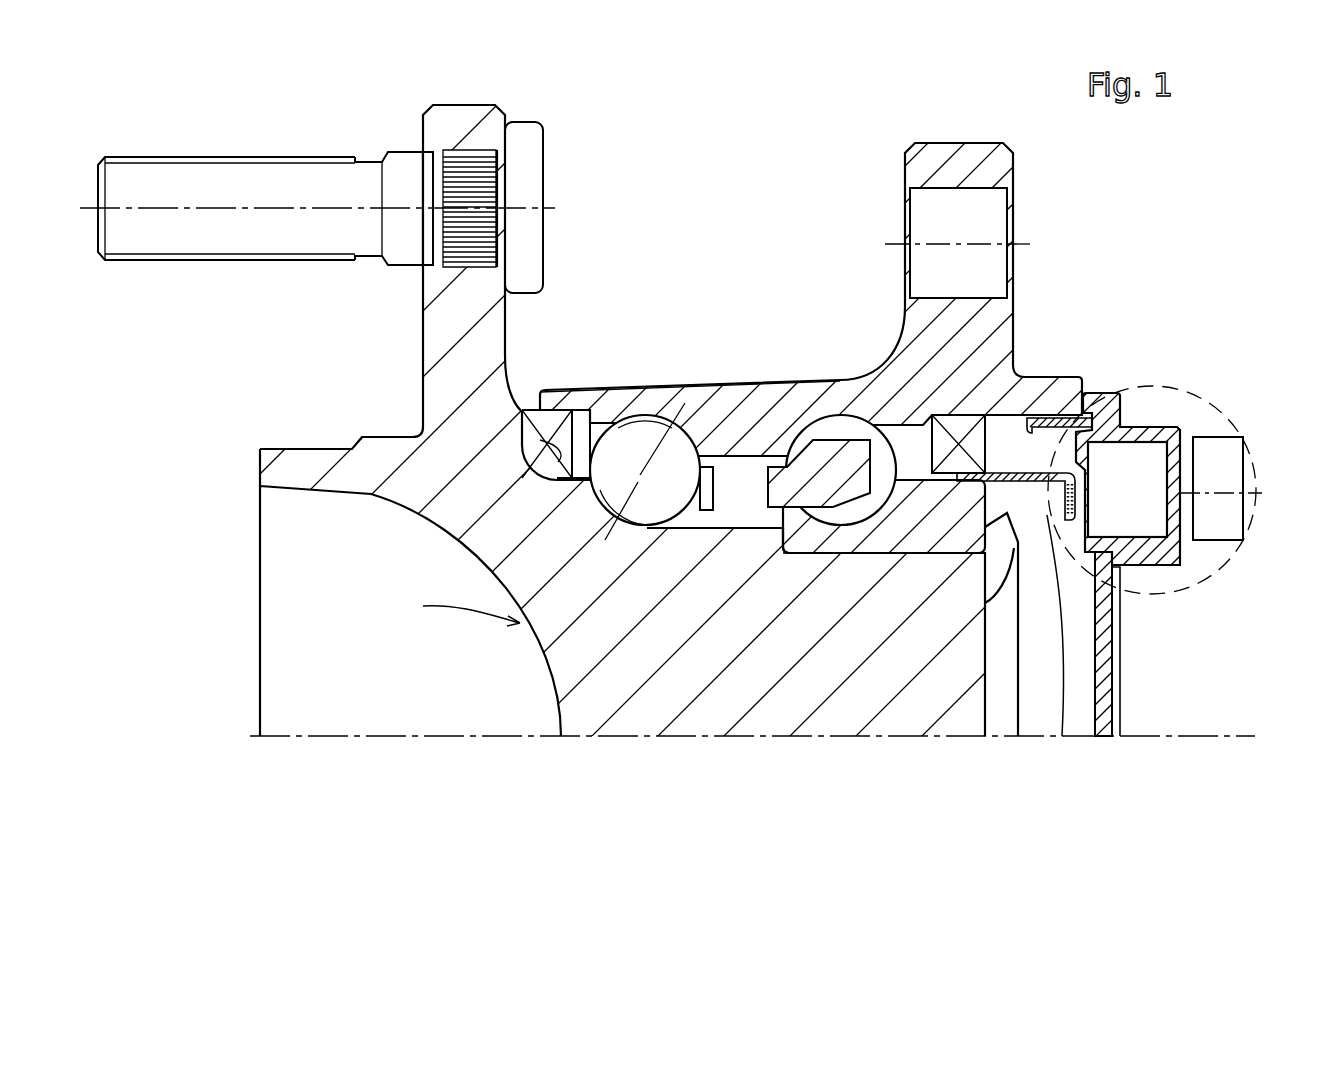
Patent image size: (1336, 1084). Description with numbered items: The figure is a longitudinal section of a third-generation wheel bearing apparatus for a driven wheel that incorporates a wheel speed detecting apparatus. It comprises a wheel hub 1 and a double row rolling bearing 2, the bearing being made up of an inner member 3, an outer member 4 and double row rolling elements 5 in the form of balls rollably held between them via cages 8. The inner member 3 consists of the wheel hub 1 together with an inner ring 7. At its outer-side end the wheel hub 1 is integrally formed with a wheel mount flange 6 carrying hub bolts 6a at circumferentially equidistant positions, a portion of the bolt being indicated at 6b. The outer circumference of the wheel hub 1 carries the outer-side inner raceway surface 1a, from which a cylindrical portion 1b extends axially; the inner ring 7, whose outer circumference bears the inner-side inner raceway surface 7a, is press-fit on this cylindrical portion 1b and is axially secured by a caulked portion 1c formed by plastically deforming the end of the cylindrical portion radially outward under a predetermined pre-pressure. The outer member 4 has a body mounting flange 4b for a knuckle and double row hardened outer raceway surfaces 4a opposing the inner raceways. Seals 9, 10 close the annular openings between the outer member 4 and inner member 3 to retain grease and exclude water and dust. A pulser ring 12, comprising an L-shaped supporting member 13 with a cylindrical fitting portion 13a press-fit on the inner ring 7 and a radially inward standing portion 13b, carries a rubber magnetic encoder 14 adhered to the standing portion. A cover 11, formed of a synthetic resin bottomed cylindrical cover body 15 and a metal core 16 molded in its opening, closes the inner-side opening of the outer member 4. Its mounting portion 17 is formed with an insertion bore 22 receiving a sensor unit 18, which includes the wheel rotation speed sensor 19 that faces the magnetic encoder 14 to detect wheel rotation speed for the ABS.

The wheel hub 1 is at (479, 539).
The inner raceway surface 1a is at (605, 505).
The cylindrical portion 1b is at (900, 552).
The caulked portion 1c is at (1011, 515).
The double row rolling bearing 2 is at (686, 288).
The inner member 3 is at (396, 621).
The outer member 4 is at (755, 388).
The outer raceway surfaces 4a is at (648, 442).
The body mounting flange 4b is at (960, 143).
The rolling elements 5 is at (790, 447).
The wheel mount flange 6 is at (468, 118).
The hub bolt 6a is at (263, 173).
The serration / fitting portion of hub bolt 6b is at (540, 465).
The inner ring 7 is at (955, 520).
The inner raceway surface 7a is at (842, 495).
The cage 8 is at (787, 520).
The seal 9 is at (551, 415).
The seal 10 is at (960, 413).
The cover 11 is at (1192, 392).
The pulser ring 12 is at (1043, 462).
The supporting member 13 is at (945, 790).
The fitting portion 13a is at (1003, 600).
The standing portion 13b is at (1050, 540).
The magnetic encoder 14 is at (1090, 510).
The cover body 15 is at (1115, 606).
The metal core 16 is at (1087, 413).
The mounting portion 17 is at (1162, 435).
The sensor unit 18 is at (1237, 437).
The wheel rotation speed sensor 19 is at (1125, 475).
The insertion bore 22 is at (1137, 523).